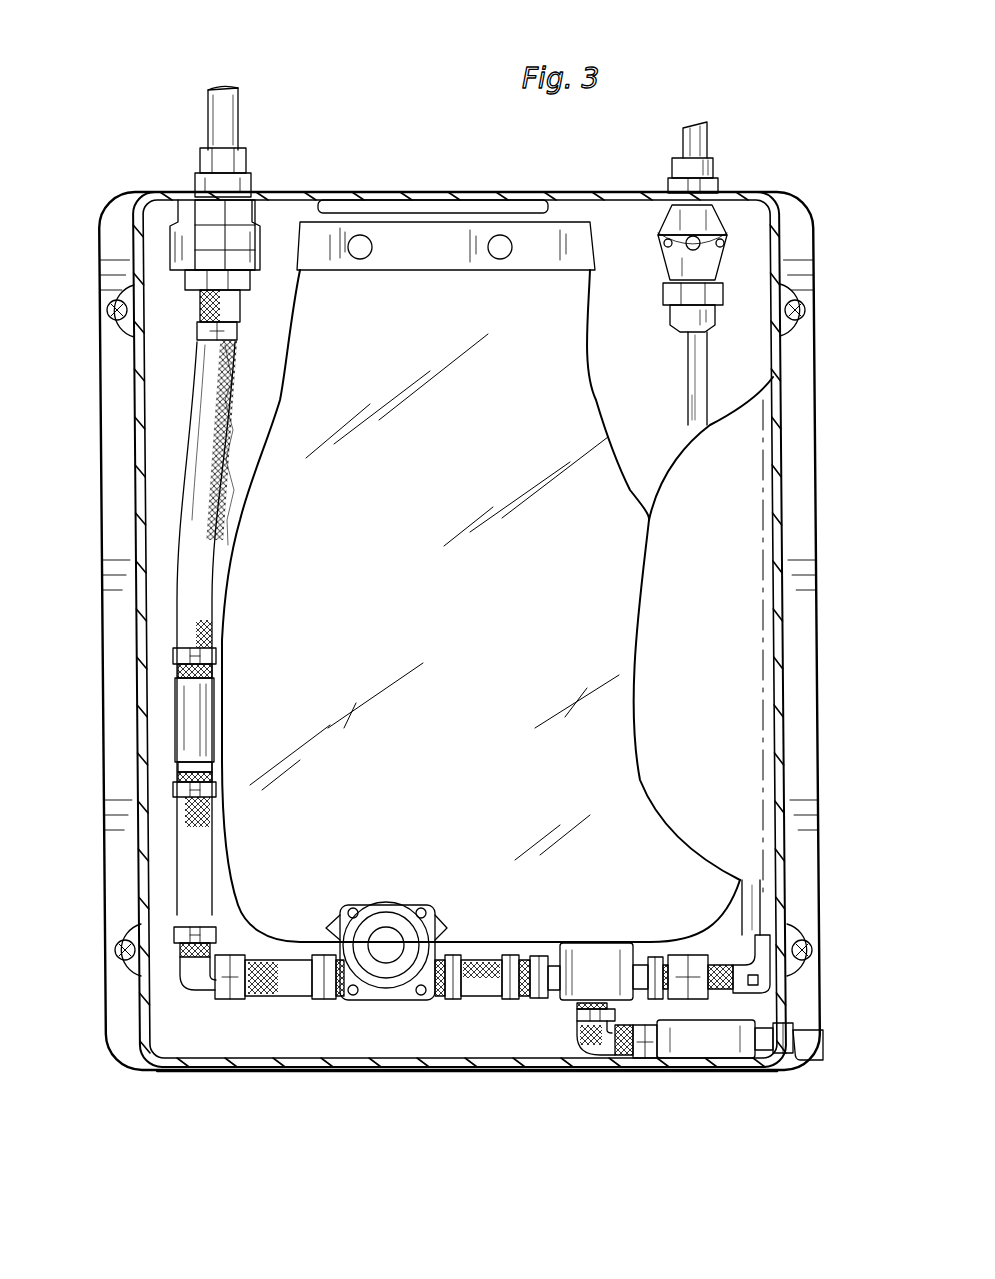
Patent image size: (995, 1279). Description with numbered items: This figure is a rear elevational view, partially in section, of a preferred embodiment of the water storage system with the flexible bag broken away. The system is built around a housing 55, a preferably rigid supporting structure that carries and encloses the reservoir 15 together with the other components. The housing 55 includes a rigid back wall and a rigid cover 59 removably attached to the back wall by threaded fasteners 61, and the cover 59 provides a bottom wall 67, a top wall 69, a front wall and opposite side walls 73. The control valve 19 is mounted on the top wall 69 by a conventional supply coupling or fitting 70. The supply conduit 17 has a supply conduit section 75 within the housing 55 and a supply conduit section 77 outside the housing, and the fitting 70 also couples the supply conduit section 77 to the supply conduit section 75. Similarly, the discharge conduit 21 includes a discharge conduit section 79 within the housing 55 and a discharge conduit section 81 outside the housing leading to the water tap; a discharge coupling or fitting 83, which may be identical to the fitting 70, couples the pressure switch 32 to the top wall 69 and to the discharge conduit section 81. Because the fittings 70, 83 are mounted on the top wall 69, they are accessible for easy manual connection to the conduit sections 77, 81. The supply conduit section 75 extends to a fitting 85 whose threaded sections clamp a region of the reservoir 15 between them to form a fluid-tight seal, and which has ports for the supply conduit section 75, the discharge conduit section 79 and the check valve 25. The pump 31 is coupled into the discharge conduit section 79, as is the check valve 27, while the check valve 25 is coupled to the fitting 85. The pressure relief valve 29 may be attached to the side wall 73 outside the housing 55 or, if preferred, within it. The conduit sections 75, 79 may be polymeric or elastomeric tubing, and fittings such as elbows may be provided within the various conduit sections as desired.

The reservoir 15 is at (497, 690).
The supply conduit 17 is at (686, 405).
The control valve 19 is at (683, 250).
The discharge conduit 21 is at (480, 962).
The check valve 25 is at (713, 1042).
The check valve 27 is at (184, 718).
The pressure relief valve 29 is at (805, 1035).
The pump 31 is at (386, 904).
The pressure switch 32 is at (240, 222).
The housing 55 is at (100, 194).
The cover 59 is at (742, 548).
The threaded fasteners 61 is at (117, 300).
The bottom wall 67 is at (313, 1073).
The top wall 69 is at (384, 198).
The supply coupling or fitting 70 is at (668, 186).
The side walls 73 is at (133, 378).
The supply conduit section 75 is at (690, 372).
The supply conduit section 77 is at (707, 135).
The discharge conduit section 79 is at (200, 430).
The discharge conduit section 81 is at (222, 105).
The discharge coupling or fitting 83 is at (205, 163).
The fitting 85 is at (597, 955).